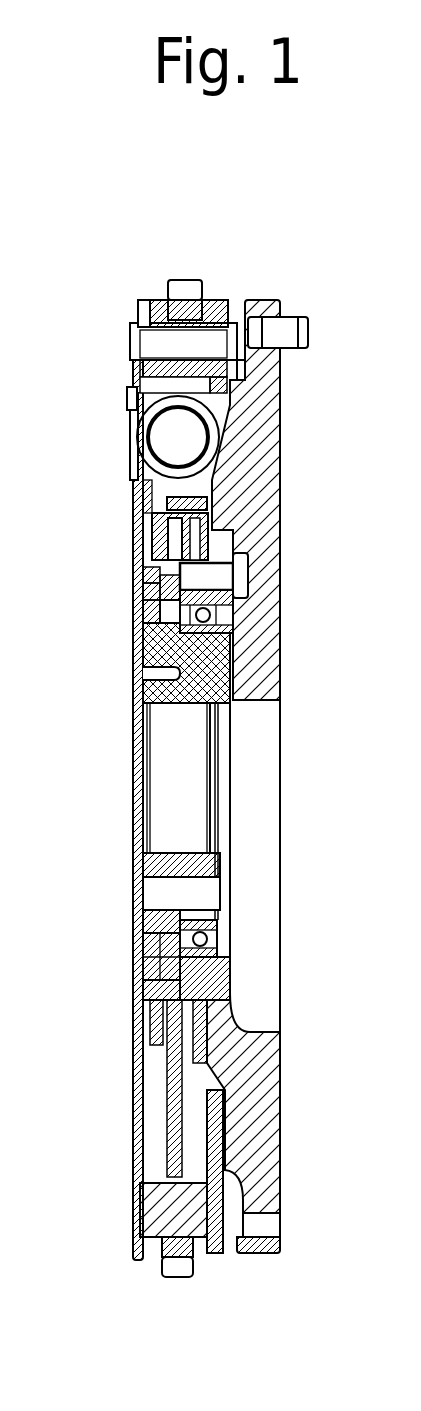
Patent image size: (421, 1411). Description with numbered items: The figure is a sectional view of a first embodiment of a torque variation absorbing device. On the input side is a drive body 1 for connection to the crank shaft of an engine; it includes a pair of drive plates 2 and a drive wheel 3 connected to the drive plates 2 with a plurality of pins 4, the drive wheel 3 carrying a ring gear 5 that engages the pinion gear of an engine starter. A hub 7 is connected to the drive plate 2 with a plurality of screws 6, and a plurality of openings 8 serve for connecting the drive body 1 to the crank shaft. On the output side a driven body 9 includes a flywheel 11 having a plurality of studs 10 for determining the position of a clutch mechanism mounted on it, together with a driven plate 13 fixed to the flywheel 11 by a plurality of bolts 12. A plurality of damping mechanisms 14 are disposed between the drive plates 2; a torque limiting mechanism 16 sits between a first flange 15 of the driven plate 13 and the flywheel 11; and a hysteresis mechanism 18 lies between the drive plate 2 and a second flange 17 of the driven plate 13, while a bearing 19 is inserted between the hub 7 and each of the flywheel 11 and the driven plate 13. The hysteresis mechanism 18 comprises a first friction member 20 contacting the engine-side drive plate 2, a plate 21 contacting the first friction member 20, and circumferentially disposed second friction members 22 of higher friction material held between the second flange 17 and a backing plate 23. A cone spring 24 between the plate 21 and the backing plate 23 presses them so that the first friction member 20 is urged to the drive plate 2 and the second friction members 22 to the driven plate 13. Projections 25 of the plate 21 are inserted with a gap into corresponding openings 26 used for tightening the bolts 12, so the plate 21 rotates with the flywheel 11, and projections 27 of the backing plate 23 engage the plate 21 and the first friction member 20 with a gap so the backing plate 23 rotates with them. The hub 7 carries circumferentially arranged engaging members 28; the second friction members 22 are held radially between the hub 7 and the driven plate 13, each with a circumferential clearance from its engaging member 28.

The drive body 1 is at (101, 314).
The drive plates 2 is at (223, 293).
The drive wheel 3 is at (162, 320).
The pins 4 is at (133, 347).
The ring gear 5 is at (188, 290).
The screws 6 is at (133, 680).
The hub 7 is at (133, 660).
The openings 8 is at (132, 883).
The driven body 9 is at (319, 310).
The studs 10 is at (290, 327).
The flywheel 11 is at (263, 395).
The bolts 12 is at (243, 577).
The driven plate 13 is at (225, 535).
The damping mechanisms 14 is at (111, 433).
The first flange 15 is at (126, 522).
The torque limiting mechanism 16 is at (123, 521).
The second flange 17 is at (233, 603).
The hysteresis mechanism 18 is at (125, 630).
The bearing 19 is at (220, 633).
The first friction member 20 is at (133, 610).
The plate 21 is at (133, 607).
The second friction members 22 is at (133, 980).
The backing plate 23 is at (133, 950).
The cone spring 24 is at (133, 597).
The projections 25 is at (147, 540).
The opening 26 is at (133, 567).
The projections 27 is at (217, 697).
The engaging members 28 is at (223, 697).